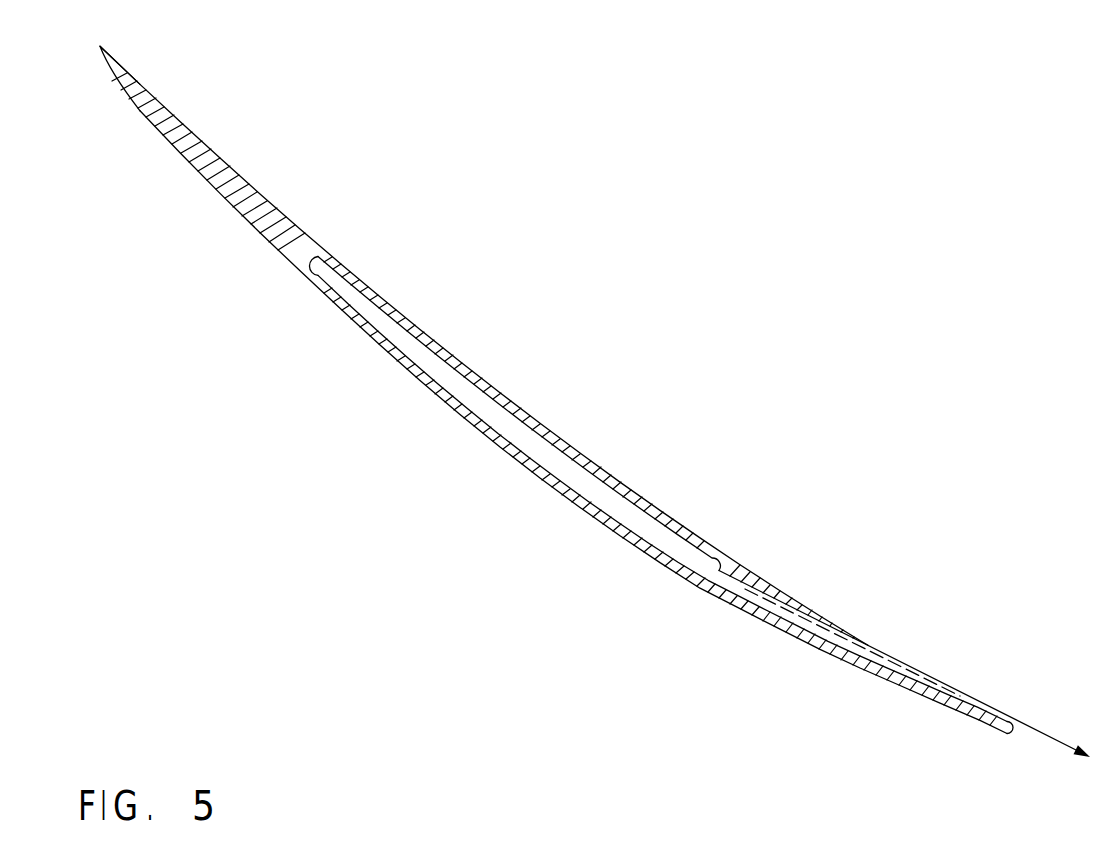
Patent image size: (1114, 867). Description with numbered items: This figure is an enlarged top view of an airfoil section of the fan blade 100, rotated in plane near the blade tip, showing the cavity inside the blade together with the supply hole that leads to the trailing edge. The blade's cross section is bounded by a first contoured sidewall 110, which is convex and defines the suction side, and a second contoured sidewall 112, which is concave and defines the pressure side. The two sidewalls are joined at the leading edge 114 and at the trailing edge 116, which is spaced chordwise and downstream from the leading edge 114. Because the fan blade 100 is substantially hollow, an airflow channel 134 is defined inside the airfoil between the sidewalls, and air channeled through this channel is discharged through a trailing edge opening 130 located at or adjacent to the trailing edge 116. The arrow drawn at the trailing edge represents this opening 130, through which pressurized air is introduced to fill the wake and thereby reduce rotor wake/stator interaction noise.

The fan blade 100 is at (659, 358).
The first contoured sidewall 110 is at (397, 361).
The second contoured sidewall 112 is at (455, 356).
The leading edge 114 is at (100, 48).
The trailing edge 116 is at (1012, 736).
The trailing edge openings 130 is at (893, 653).
The airflow channels 134 is at (541, 456).